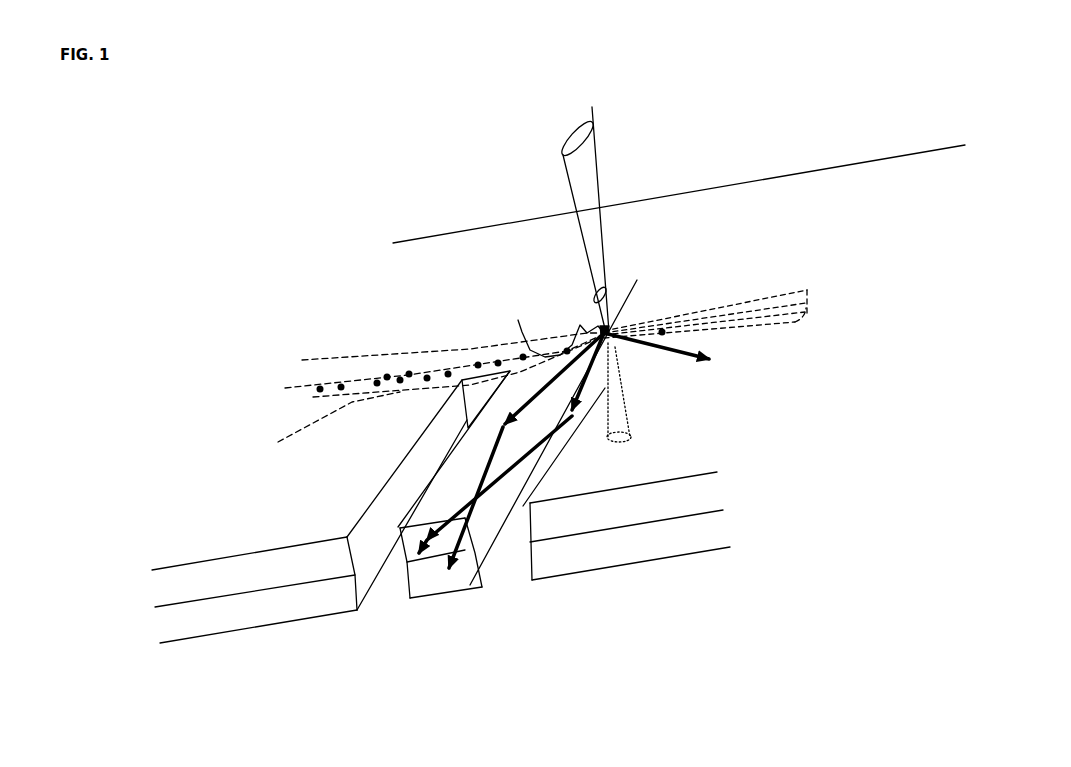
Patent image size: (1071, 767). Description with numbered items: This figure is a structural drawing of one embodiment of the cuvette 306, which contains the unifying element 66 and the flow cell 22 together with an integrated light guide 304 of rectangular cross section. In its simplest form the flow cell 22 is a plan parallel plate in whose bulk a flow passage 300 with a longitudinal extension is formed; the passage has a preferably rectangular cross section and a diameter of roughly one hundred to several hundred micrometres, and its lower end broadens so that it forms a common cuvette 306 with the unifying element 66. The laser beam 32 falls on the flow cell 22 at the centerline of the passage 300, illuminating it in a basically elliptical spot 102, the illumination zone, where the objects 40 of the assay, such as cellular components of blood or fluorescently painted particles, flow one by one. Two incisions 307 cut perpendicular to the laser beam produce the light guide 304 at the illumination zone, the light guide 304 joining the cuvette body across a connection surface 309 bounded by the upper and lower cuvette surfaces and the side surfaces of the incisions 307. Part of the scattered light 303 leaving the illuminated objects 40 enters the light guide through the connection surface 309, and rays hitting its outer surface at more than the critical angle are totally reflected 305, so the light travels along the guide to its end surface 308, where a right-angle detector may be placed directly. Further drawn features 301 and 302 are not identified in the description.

The flow cell 22 is at (792, 213).
The laser beam 32 is at (608, 233).
The elliptical spot 102 is at (612, 327).
The flow passage 300 is at (780, 303).
The scattered light 303 is at (556, 330).
The cuvette 306 is at (447, 210).
The unifying element 66 is at (337, 342).
The objects of the assay 40 is at (437, 372).
The connection surface of the light guide 309 is at (473, 416).
The light guide 304 is at (417, 510).
The totally reflected light 305 is at (400, 532).
The substrate upper layer 301 is at (167, 585).
The substrate lower layer 302 is at (222, 612).
The incisions 307 is at (385, 587).
The end surface of the light guide 308 is at (432, 573).